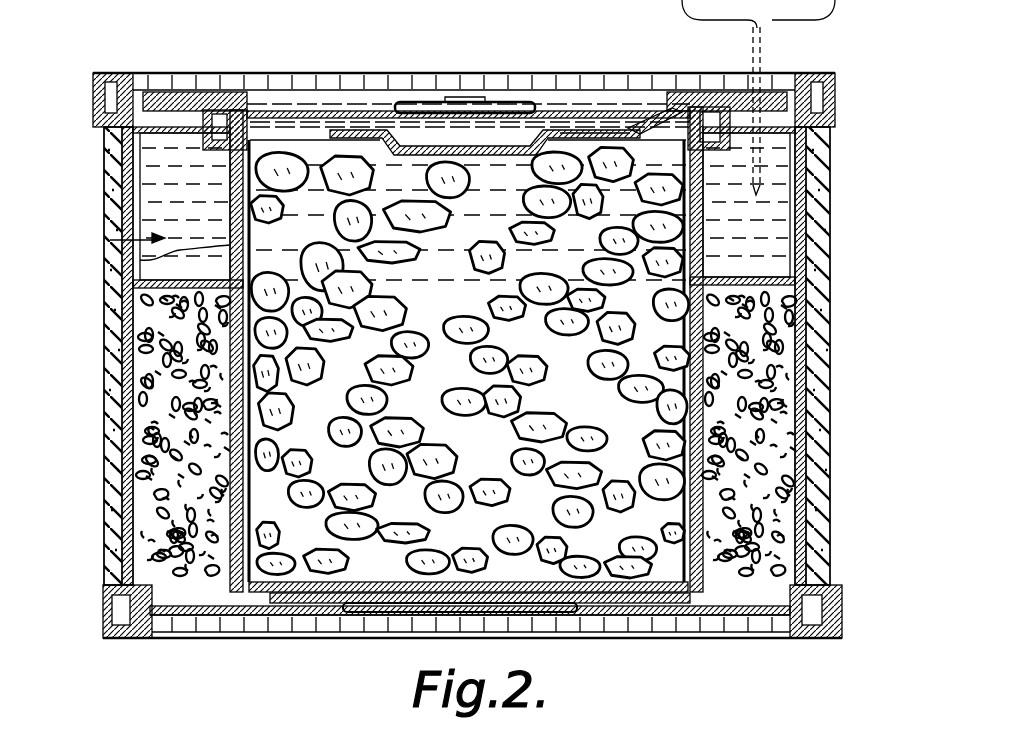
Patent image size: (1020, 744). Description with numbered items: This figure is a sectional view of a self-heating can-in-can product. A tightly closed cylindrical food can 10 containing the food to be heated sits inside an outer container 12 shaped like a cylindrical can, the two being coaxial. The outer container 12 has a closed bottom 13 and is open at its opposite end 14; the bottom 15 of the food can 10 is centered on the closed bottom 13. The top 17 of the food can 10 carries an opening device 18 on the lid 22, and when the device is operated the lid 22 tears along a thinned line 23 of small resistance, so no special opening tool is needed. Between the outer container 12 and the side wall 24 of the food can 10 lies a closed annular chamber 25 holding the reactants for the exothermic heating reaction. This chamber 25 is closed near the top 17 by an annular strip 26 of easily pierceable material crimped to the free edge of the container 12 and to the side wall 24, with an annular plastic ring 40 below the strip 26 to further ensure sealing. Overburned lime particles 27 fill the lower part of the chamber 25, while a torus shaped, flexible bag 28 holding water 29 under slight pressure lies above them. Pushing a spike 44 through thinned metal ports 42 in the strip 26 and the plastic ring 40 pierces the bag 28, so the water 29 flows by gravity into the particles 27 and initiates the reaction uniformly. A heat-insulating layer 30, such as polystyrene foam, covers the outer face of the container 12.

The food can 10 is at (838, 93).
The outer container 12 is at (96, 75).
The closed bottom 13 is at (330, 600).
The open end 14 is at (560, 125).
The bottom of the food can 15 is at (630, 612).
The top of the food can 17 is at (618, 118).
The opening device 18 is at (485, 100).
The lid 22 is at (365, 128).
The thinned line 23 is at (294, 75).
The side wall 24 is at (113, 256).
The annular chamber 25 is at (110, 240).
The annular strip 26 is at (212, 75).
The overburned lime particles 27 is at (830, 380).
The torus shaped bag 28 is at (812, 247).
The water 29 is at (775, 212).
The heat-insulating layer 30 is at (104, 172).
The annular plastic ring 40 is at (832, 137).
The thinned metal ports 42 is at (163, 75).
The spike 44 is at (545, 612).